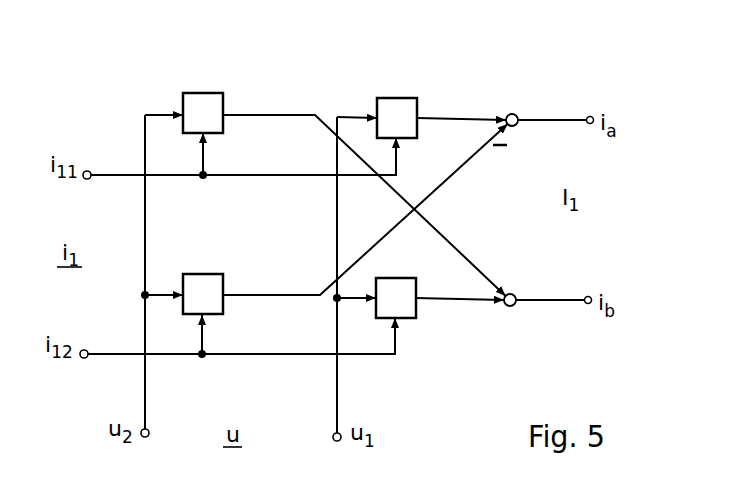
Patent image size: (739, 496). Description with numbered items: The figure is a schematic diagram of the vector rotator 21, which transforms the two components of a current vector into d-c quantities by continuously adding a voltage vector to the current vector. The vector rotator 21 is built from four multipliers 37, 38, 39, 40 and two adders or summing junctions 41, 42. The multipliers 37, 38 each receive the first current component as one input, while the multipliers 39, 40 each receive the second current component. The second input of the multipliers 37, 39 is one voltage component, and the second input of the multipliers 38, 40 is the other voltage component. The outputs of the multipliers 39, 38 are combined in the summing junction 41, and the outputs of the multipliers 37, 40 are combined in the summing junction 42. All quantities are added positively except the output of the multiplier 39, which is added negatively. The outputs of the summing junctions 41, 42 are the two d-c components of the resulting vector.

The vector rotator 21 is at (490, 398).
The multiplier 37 is at (203, 93).
The multiplier 38 is at (397, 98).
The multiplier 39 is at (202, 274).
The multiplier 40 is at (396, 278).
The summing junction 41 is at (512, 114).
The summing junction 42 is at (511, 294).